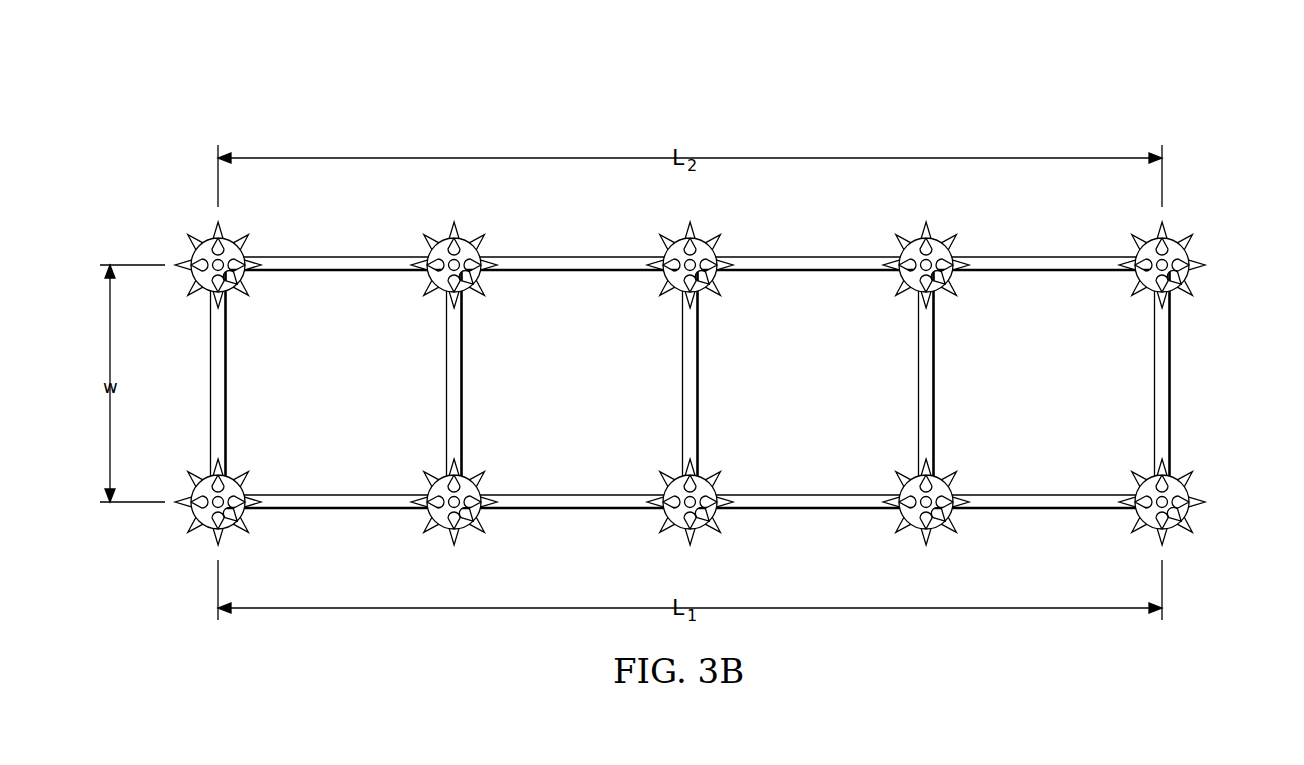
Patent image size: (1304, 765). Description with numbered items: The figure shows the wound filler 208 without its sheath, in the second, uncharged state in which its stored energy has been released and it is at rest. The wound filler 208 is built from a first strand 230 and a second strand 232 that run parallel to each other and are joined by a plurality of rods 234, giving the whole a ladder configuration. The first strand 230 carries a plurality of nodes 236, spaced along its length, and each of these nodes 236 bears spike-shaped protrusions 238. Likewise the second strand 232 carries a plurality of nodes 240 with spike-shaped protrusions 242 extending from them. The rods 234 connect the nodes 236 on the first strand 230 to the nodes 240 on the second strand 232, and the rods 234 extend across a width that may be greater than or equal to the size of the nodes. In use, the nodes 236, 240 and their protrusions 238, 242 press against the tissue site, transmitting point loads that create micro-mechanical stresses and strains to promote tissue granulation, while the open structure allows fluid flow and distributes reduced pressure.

The wound filler 208 is at (852, 100).
The first strand 230 is at (328, 510).
The second strand 232 is at (324, 257).
The rods 234 is at (446, 384).
The nodes 236 is at (238, 537).
The protrusions 238 is at (200, 540).
The nodes 240 is at (246, 284).
The protrusions 242 is at (185, 247).